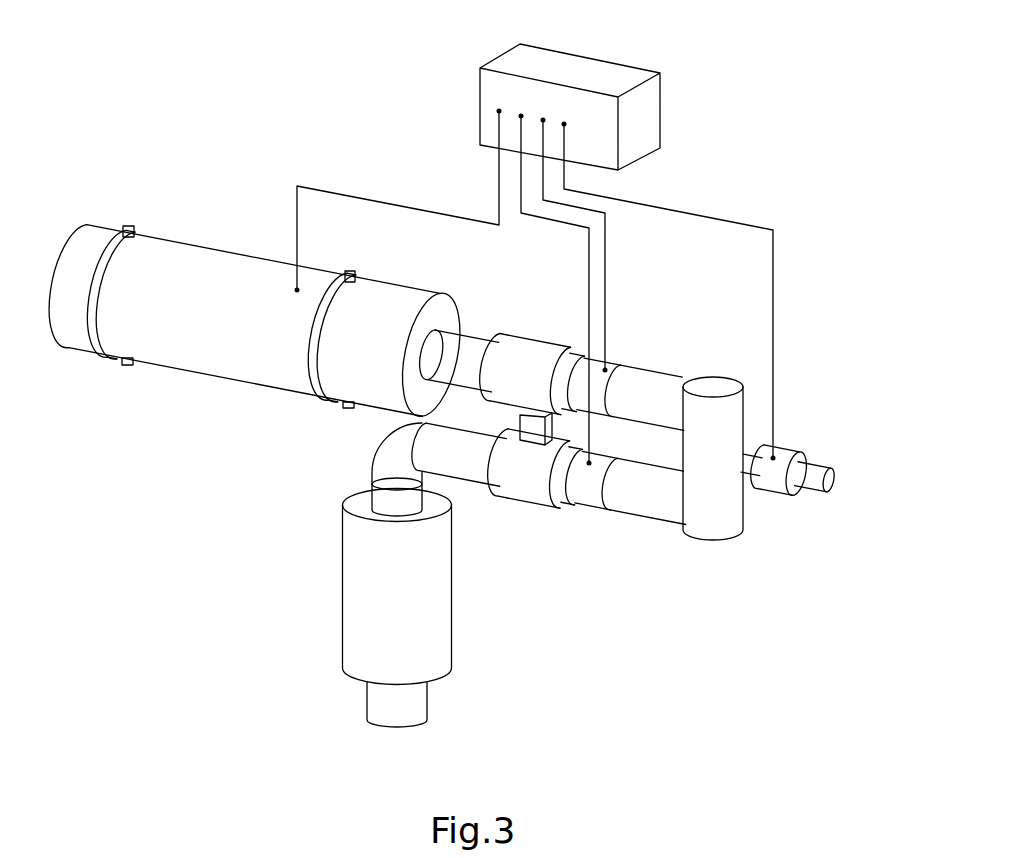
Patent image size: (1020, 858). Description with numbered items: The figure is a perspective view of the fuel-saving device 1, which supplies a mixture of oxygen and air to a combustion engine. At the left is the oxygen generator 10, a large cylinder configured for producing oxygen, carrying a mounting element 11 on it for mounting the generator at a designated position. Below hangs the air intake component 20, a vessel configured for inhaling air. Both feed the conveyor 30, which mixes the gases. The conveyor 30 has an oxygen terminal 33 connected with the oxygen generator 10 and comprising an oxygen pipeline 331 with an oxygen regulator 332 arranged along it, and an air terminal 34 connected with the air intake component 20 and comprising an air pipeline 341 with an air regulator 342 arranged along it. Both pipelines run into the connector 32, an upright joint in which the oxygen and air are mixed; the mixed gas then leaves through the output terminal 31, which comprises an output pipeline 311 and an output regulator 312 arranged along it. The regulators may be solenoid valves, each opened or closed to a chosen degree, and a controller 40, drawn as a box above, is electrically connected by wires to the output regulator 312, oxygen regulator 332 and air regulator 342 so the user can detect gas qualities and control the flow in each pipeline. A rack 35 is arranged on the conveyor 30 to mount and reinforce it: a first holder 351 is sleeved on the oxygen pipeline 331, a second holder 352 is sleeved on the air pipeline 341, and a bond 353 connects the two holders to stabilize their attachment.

The fuel-saving device 1 is at (261, 186).
The oxygen generator 10 is at (244, 283).
The mounting element 11 is at (315, 366).
The air intake component 20 is at (375, 627).
The conveyor 30 is at (803, 420).
The output terminal 31 is at (830, 467).
The output pipeline 311 is at (818, 477).
The output regulator 312 is at (780, 467).
The connector 32 is at (715, 480).
The oxygen terminal 33 is at (609, 323).
The oxygen pipeline 331 is at (680, 392).
The oxygen regulator 332 is at (596, 378).
The air terminal 34 is at (653, 567).
The air pipeline 341 is at (660, 502).
The air regulator 342 is at (580, 487).
The rack 35 is at (437, 422).
The first holder 351 is at (525, 360).
The second holder 352 is at (512, 473).
The bond 353 is at (537, 425).
The controller 40 is at (577, 103).